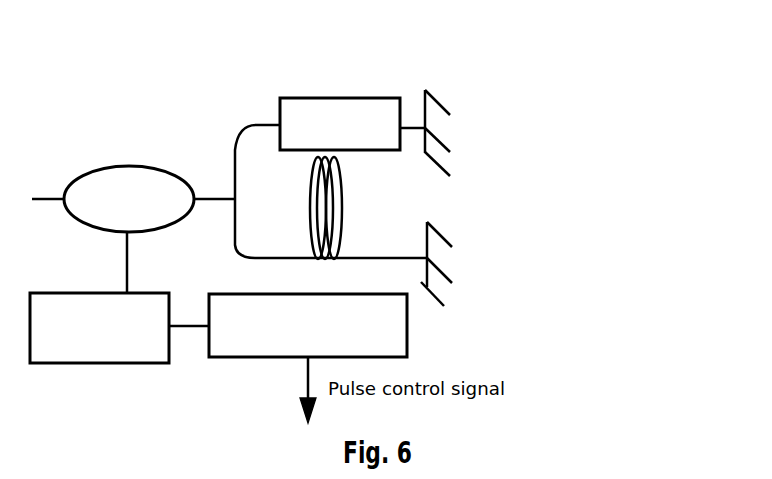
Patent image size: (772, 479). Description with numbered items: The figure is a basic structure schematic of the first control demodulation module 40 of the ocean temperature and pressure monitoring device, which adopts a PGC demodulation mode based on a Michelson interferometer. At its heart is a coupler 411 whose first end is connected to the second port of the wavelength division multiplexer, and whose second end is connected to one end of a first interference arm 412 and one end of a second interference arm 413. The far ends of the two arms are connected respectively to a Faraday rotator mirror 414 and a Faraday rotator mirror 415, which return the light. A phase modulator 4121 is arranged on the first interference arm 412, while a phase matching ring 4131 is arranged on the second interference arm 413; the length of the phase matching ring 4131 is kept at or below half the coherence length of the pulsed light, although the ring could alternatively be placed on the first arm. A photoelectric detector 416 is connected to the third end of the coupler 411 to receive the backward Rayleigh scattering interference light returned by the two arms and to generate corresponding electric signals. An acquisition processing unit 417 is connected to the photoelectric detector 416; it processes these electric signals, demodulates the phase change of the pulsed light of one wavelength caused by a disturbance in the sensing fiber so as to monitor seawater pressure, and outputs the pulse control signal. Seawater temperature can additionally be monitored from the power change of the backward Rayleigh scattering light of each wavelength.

The control demodulation module 40 is at (246, 62).
The coupler 411 is at (127, 165).
The first interference arm 412 is at (256, 120).
The phase modulator 4121 is at (378, 98).
The second interference arm 413 is at (378, 258).
The phase matching ring 4131 is at (344, 222).
The Faraday rotator mirror 414 is at (538, 128).
The Faraday rotator mirror 415 is at (529, 258).
The photoelectric detector 416 is at (167, 312).
The acquisition processing unit 417 is at (400, 350).